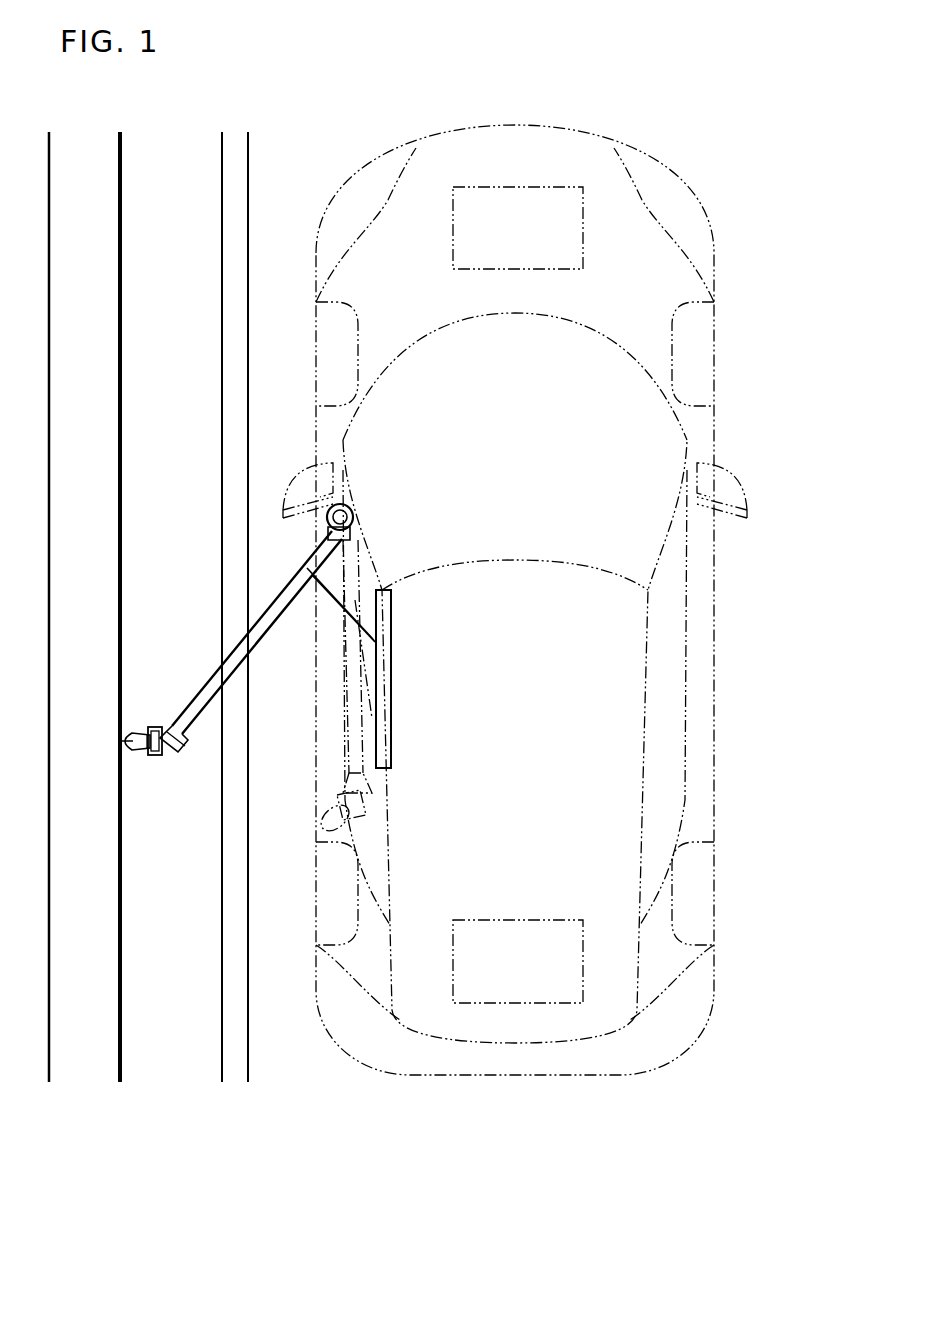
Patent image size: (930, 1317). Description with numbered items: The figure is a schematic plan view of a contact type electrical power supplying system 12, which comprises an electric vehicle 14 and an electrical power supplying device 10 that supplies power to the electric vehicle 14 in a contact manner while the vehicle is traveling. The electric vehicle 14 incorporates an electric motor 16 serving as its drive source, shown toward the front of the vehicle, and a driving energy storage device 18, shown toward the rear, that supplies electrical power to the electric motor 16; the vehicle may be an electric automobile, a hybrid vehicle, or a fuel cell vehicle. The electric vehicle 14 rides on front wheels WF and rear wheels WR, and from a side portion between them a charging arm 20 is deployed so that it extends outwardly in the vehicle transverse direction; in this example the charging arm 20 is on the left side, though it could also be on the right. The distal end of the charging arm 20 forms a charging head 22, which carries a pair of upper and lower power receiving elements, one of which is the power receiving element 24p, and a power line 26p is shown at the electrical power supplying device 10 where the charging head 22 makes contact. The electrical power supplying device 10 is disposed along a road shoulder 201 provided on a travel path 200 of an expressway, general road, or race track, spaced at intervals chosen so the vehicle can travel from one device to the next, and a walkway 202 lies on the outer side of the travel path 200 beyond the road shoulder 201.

The electrical power supplying device 10 is at (117, 162).
The contact type electrical power supplying system 12 is at (308, 86).
The electric vehicle 14 is at (452, 140).
The electric motor 16 is at (513, 187).
The driving energy storage device 18 is at (518, 920).
The charging arm 20 is at (204, 675).
The charging head 22 is at (143, 727).
The power receiving element 24p is at (126, 752).
The positive power line (26n negative power line) 26p is at (122, 304).
The travel path 200 is at (730, 1092).
The road shoulder 201 is at (219, 1092).
The walkway 202 is at (47, 1092).
The front wheels WF is at (349, 308).
The rear wheels WR is at (360, 915).